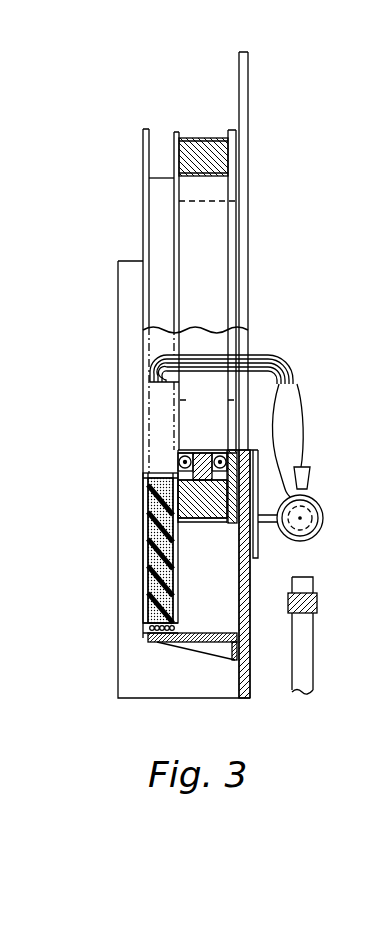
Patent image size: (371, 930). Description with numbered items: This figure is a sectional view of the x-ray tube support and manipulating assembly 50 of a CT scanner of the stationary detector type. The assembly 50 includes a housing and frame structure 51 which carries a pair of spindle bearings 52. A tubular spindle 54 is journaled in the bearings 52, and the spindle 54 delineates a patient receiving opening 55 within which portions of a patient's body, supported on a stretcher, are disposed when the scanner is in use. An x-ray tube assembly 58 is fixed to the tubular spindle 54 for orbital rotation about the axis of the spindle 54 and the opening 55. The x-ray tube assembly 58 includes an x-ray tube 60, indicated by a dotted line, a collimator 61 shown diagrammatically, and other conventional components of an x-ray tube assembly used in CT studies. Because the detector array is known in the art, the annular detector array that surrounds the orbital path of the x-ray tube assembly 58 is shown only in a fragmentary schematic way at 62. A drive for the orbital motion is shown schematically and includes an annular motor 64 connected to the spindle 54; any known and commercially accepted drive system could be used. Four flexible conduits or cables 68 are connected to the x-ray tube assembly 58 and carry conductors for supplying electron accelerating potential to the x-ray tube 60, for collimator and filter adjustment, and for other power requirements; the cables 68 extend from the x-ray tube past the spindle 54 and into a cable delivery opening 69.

The x-ray tube support and manipulating assembly 50 is at (259, 137).
The housing and frame structure 51 is at (187, 652).
The spindle bearings 52 is at (181, 455).
The tubular spindle 54 is at (256, 447).
The patient receiving opening 55 is at (207, 401).
The x-ray tube assembly 58 is at (320, 500).
The x-ray tube 60 is at (307, 530).
The collimator 61 is at (310, 482).
The annular detector array 62 is at (324, 644).
The annular motor 64 is at (202, 150).
The flexible conduits or cables 68 is at (295, 375).
The cable delivery opening 69 is at (150, 357).